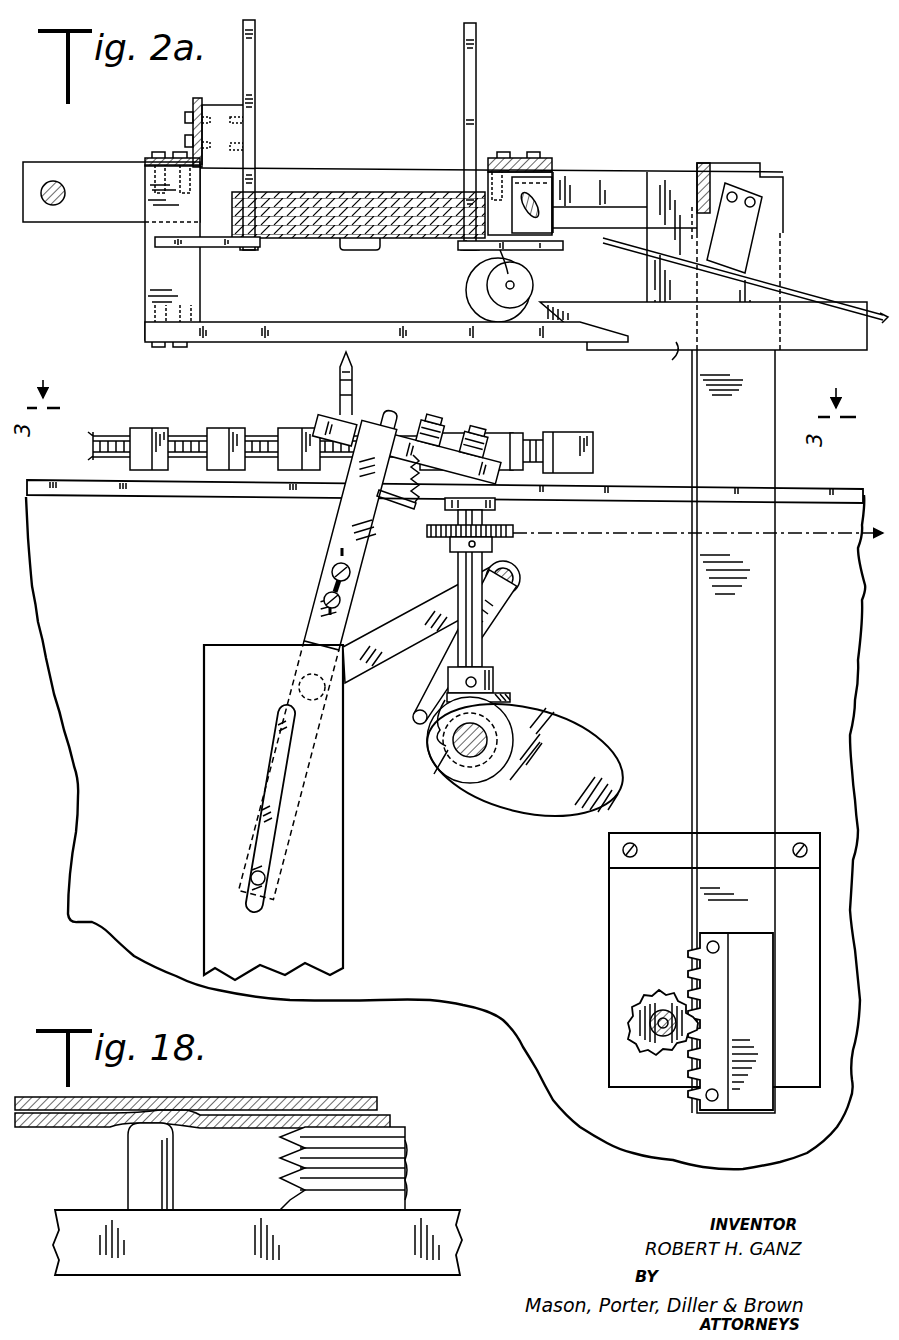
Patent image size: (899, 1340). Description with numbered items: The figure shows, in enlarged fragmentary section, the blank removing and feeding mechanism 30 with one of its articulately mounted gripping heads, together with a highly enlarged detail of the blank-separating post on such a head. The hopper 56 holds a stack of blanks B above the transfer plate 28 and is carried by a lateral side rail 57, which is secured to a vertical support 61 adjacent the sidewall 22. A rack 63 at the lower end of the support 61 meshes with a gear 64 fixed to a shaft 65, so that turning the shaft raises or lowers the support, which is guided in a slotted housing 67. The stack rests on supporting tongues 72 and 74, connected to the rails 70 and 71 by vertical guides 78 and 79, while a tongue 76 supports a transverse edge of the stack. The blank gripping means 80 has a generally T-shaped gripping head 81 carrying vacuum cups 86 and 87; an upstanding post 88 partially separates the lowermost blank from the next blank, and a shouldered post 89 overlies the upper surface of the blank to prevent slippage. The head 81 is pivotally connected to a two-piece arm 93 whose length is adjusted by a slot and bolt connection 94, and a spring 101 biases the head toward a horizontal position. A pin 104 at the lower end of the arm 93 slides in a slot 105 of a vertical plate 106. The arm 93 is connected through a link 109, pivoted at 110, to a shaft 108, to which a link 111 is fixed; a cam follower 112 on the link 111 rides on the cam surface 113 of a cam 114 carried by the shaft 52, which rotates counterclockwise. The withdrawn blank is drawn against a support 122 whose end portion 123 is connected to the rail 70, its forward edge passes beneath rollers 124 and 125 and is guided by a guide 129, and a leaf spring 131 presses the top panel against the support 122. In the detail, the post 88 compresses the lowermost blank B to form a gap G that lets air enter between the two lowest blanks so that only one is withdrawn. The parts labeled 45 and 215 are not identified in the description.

In FIG. 2A, the sidewall 22 is at (678, 621).
In FIG. 2A, the transfer plate 28 is at (668, 488).
In FIG. 2A, the blank removing and feeding mechanism 30 is at (338, 517).
In FIG. 2A, the rack rail 45 is at (200, 424).
In FIG. 2A, the shaft 52 is at (470, 754).
In FIG. 2A, the hopper 56 is at (478, 114).
In FIG. 2A, the lateral side rail 57 is at (116, 203).
In FIG. 2A, the vertical support 61 is at (740, 453).
In FIG. 2A, the rack 63 is at (715, 1022).
In FIG. 2A, the gear 64 is at (650, 990).
In FIG. 2A, the shaft 65 is at (668, 1048).
In FIG. 2A, the slotted housing 67 is at (653, 913).
In FIG. 2A, the rail 70 is at (193, 100).
In FIG. 2A, the rail 71 is at (550, 159).
In FIG. 2A, the supporting tongue 72 is at (222, 247).
In FIG. 2A, the supporting tongue 74 is at (480, 250).
In FIG. 2A, the tongue 76 is at (370, 252).
In FIG. 2A, the vertical guide 78 is at (255, 75).
In FIG. 2A, the vertical guide 79 is at (476, 78).
In FIG. 2A, the blank gripping means 80 is at (360, 416).
In FIG. 2A, the gripping head 81 is at (440, 454).
In FIG. 18, the gripping head 81 is at (266, 1276).
In FIG. 2A, the vacuum cup 86 is at (430, 424).
In FIG. 18, the vacuum cup 86 is at (404, 1172).
In FIG. 2A, the vacuum cup 87 is at (481, 438).
In FIG. 2A, the blank separating means 88 is at (390, 414).
In FIG. 18, the blank separating means 88 is at (140, 1160).
In FIG. 2A, the shouldered post 89 is at (338, 390).
In FIG. 2A, the two-piece arm 93 is at (367, 538).
In FIG. 2A, the slot and bolt connection 94 is at (354, 586).
In FIG. 2A, the spring 101 is at (375, 476).
In FIG. 2A, the pin 104 is at (264, 878).
In FIG. 2A, the slot 105 is at (284, 820).
In FIG. 2A, the vertical plate 106 is at (243, 734).
In FIG. 2A, the shaft 108 is at (516, 576).
In FIG. 2A, the link 109 is at (408, 615).
In FIG. 2A, the pivotal connection 110 is at (322, 694).
In FIG. 2A, the link 111 is at (498, 615).
In FIG. 2A, the cam follower 112 is at (413, 718).
In FIG. 2A, the cam surface 113 is at (578, 732).
In FIG. 2A, the cam 114 is at (543, 781).
In FIG. 2A, the support 122 is at (456, 344).
In FIG. 2A, the end portion 123 is at (172, 249).
In FIG. 2A, the roller 124 is at (468, 296).
In FIG. 2A, the roller 125 is at (534, 284).
In FIG. 2A, the guide 129 is at (703, 311).
In FIG. 2A, the leaf spring 131 is at (806, 292).
In FIG. 2A, the rail block 215 is at (226, 428).
In FIG. 2A, the blank B is at (350, 190).
In FIG. 18, the blank B is at (370, 1114).
In FIG. 18, the gap G is at (270, 1107).